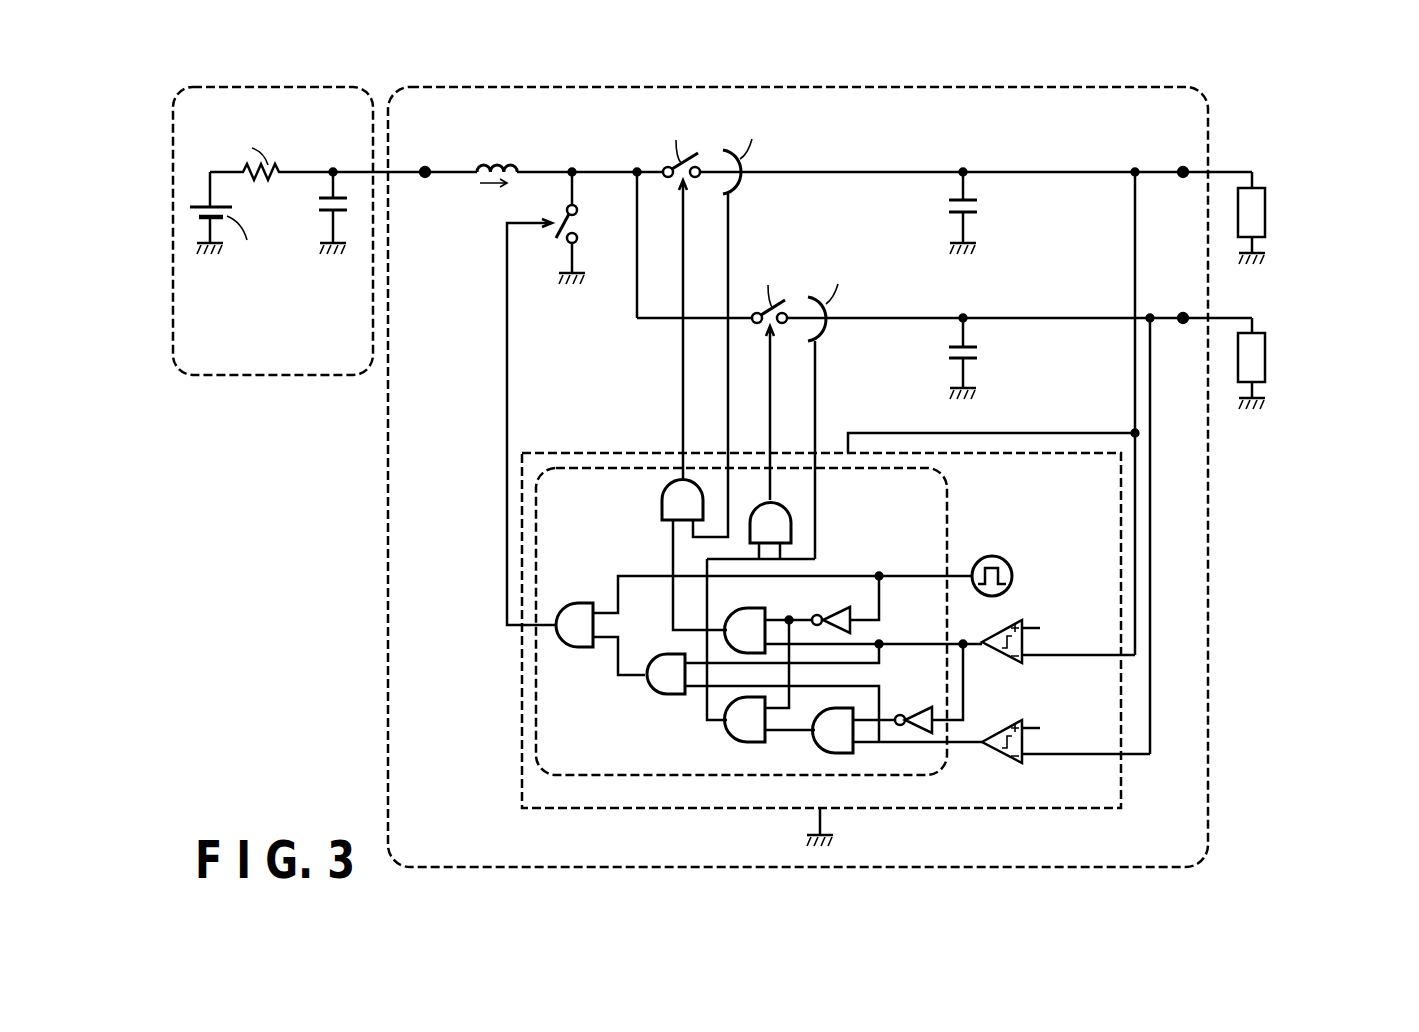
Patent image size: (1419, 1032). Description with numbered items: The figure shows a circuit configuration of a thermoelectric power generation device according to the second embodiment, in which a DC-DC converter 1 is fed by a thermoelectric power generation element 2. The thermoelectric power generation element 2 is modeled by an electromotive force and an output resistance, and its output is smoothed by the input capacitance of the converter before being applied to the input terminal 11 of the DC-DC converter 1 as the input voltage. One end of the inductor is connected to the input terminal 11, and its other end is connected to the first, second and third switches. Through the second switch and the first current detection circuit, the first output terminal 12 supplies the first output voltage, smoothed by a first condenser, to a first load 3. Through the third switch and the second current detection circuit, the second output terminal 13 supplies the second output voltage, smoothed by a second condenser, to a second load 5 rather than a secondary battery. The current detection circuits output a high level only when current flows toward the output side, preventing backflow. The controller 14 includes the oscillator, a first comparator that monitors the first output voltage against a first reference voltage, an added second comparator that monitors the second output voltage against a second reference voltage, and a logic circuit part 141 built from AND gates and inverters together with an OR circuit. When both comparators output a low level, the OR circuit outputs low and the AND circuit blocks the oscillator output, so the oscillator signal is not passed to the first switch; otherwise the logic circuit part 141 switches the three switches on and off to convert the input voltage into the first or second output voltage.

The DC-DC converter 1 is at (853, 87).
The thermoelectric power generation element 2 is at (267, 87).
The first load 3 is at (1268, 203).
The second load 5 is at (1268, 348).
The input terminal 11 is at (425, 167).
The first output terminal 12 is at (1183, 167).
The second output terminal 13 is at (1183, 313).
The controller 14 is at (522, 770).
The logic circuit part 141 is at (630, 775).